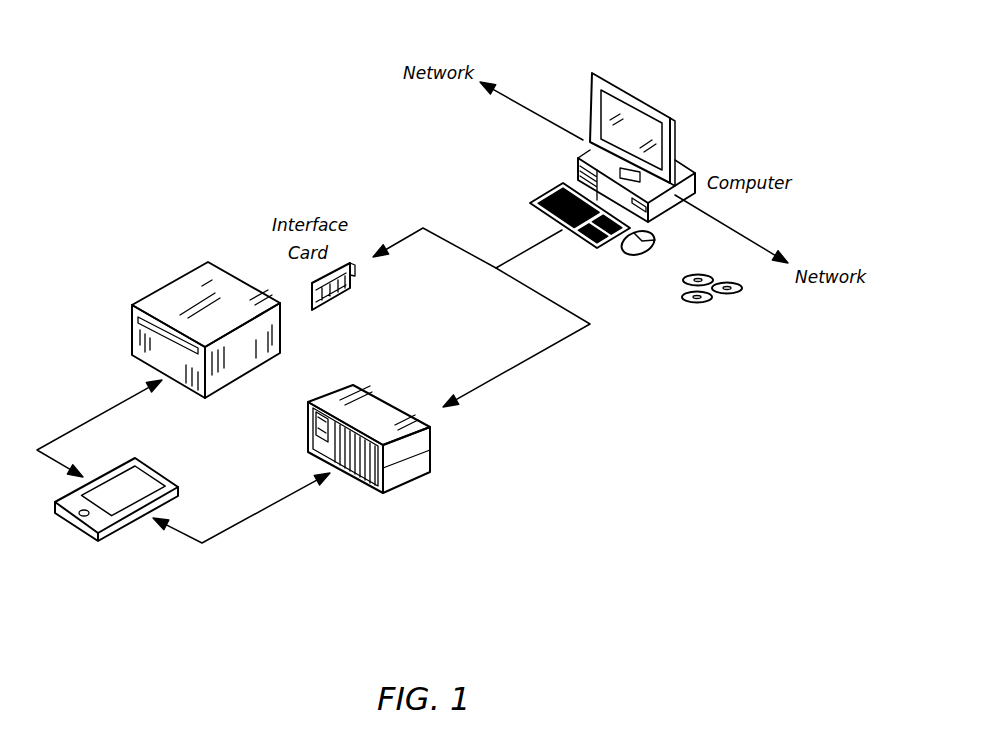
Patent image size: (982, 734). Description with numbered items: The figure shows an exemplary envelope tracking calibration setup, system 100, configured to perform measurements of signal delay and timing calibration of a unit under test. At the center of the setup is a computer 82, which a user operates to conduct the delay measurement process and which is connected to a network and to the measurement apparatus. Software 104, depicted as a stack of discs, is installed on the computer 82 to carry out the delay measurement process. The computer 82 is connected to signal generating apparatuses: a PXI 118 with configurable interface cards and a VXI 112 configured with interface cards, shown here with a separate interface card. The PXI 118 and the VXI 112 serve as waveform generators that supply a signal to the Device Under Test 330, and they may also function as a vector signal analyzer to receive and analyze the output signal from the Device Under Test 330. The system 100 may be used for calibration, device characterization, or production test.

The system 100 is at (192, 70).
The computer 82 is at (642, 90).
The VXI 112 is at (200, 268).
The PXI 118 is at (380, 493).
The software 104 is at (702, 303).
The Device Under Test (DUT) 330 is at (100, 533).